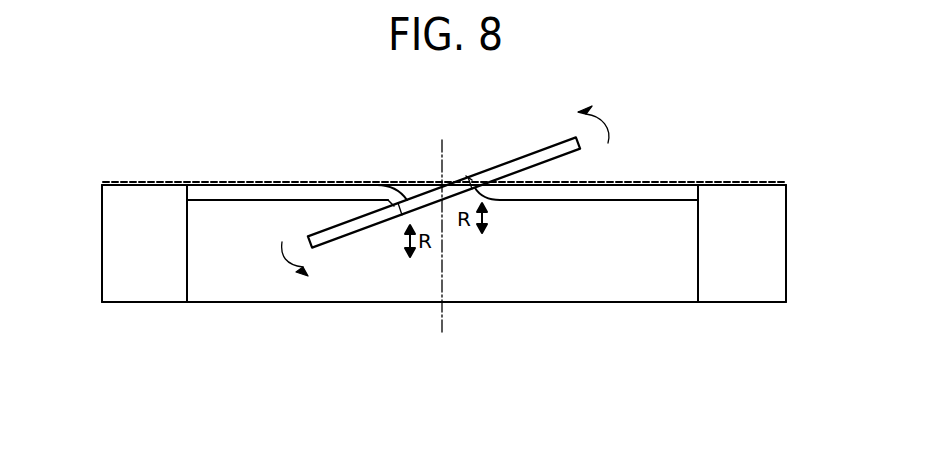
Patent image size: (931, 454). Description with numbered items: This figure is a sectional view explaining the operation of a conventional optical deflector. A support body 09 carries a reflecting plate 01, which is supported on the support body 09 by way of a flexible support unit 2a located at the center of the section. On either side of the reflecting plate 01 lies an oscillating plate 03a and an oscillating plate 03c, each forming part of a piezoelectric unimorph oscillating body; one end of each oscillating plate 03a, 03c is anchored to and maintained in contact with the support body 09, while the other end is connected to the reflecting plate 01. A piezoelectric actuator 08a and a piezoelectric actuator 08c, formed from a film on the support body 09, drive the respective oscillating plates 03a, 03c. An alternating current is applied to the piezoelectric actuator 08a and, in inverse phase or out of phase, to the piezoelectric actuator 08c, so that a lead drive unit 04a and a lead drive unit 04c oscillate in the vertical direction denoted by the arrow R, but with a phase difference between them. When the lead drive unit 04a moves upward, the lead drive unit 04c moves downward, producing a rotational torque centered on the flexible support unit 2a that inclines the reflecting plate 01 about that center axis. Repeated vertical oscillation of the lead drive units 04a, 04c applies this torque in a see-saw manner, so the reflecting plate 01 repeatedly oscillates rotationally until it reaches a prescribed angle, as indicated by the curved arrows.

The reflecting plate 01 is at (550, 147).
The flexible support unit 2a is at (440, 185).
The oscillating plate 03a is at (652, 190).
The oscillating plate 03c is at (292, 190).
The lead drive unit 04a is at (492, 178).
The lead drive unit 04c is at (393, 200).
The piezoelectric actuator 08a is at (745, 182).
The piezoelectric actuator 08c is at (137, 183).
The support body 09 is at (760, 296).